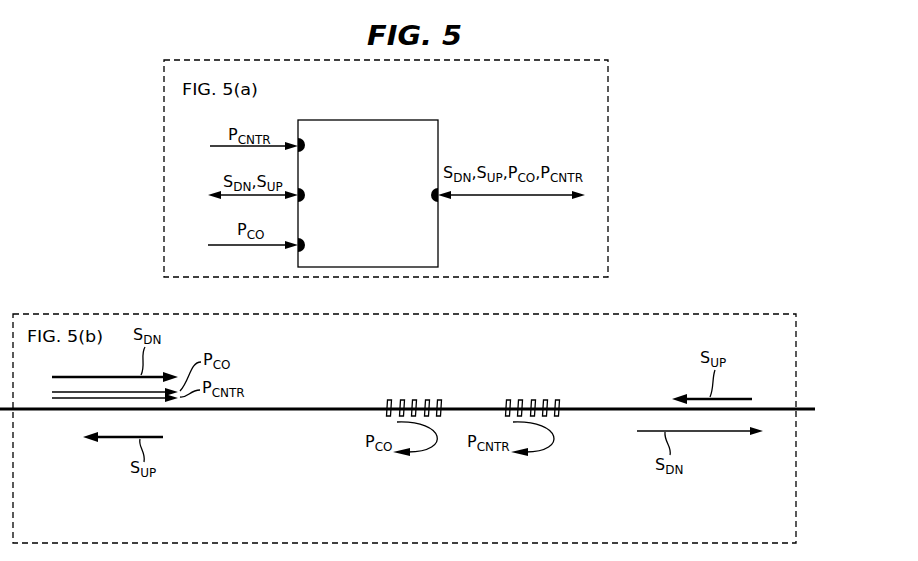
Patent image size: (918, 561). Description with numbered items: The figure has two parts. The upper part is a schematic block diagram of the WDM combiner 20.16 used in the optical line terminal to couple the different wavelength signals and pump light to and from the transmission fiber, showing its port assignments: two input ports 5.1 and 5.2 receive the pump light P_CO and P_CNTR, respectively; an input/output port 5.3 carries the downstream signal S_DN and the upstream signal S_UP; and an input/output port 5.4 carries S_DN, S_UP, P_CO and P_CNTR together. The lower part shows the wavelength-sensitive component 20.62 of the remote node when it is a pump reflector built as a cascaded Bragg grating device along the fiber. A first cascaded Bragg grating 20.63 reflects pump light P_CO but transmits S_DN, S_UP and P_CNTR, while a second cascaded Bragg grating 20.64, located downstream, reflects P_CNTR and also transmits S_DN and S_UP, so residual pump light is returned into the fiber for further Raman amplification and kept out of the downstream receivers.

The WDM combiner 20.16 is at (393, 120).
The input port 5.1 is at (306, 146).
The input port 5.2 is at (306, 245).
The input/output port 5.3 is at (306, 194).
The input/output port 5.4 is at (431, 193).
The wavelength-sensitive component 20.62 is at (733, 313).
The first cascaded Bragg grating 20.63 is at (411, 399).
The second cascaded Bragg grating 20.64 is at (526, 399).